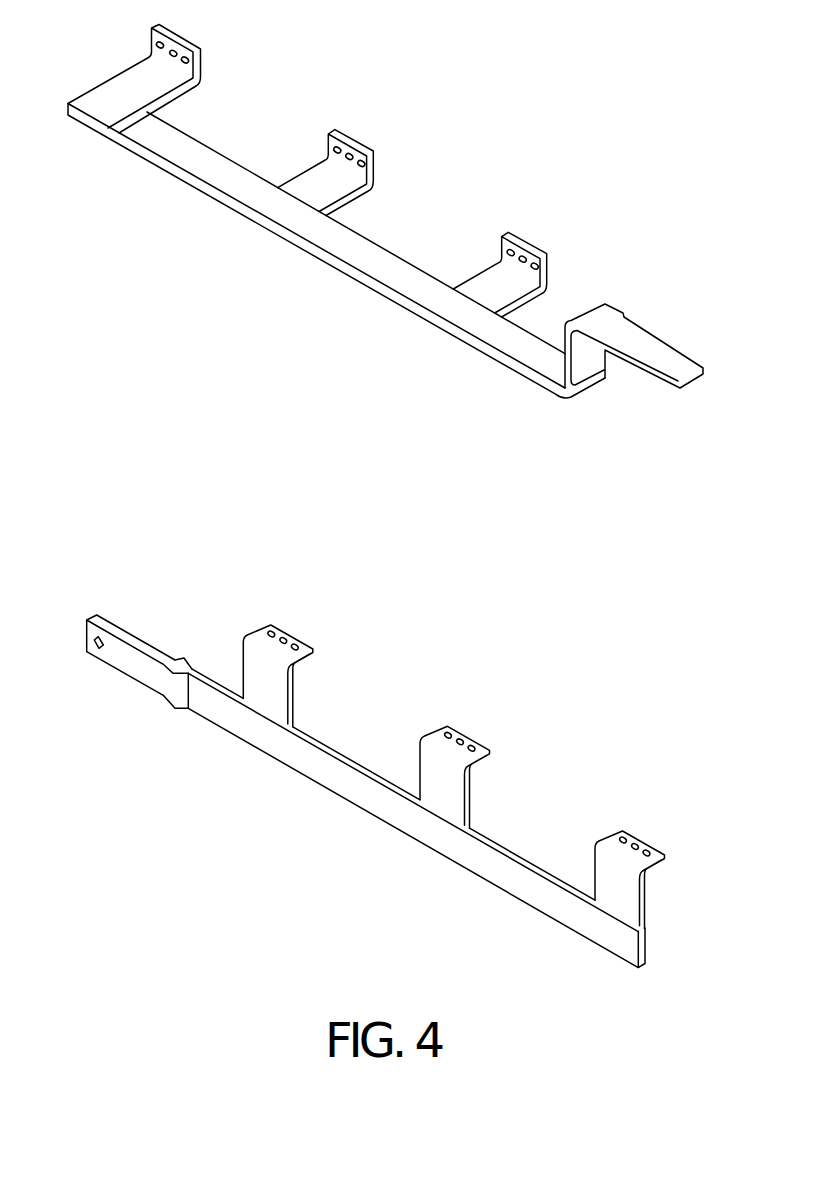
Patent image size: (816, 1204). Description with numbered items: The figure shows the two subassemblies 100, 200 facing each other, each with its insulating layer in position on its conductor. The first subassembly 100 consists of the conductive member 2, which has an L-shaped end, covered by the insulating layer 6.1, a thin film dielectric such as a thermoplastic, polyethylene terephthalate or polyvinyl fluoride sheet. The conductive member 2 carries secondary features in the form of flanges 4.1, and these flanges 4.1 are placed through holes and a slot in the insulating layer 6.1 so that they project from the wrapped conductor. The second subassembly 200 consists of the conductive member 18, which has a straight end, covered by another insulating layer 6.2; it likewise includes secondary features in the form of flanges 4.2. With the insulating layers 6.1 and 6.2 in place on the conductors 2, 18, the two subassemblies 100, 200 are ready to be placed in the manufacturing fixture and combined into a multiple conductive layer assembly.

The conductive member 2 is at (93, 119).
The insulating layer 6.1 is at (213, 174).
The flanges 4.1 is at (188, 35).
The subassembly 100 is at (124, 392).
The conductive member 18 is at (147, 665).
The flanges 4.2 is at (621, 827).
The insulating layer 6.2 is at (346, 793).
The second subassembly 200 is at (141, 901).